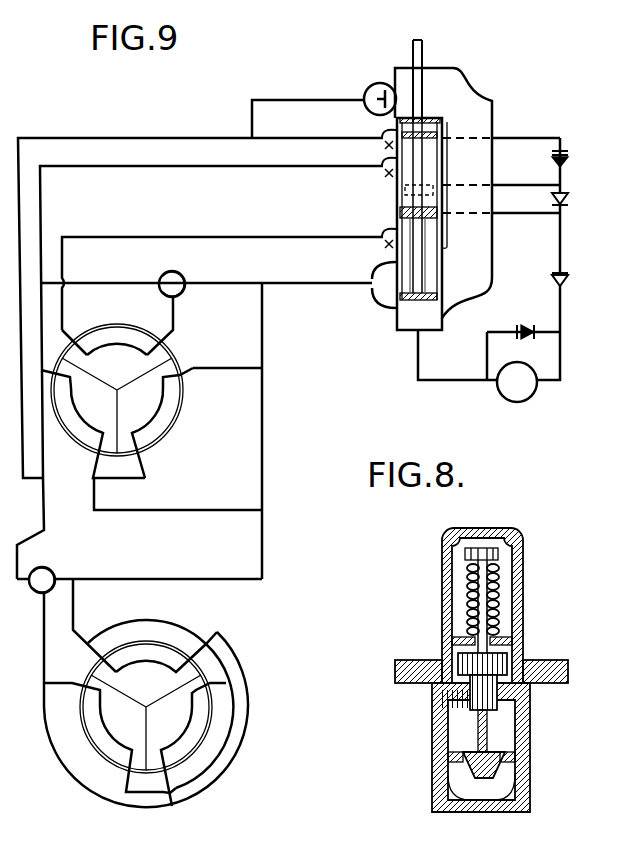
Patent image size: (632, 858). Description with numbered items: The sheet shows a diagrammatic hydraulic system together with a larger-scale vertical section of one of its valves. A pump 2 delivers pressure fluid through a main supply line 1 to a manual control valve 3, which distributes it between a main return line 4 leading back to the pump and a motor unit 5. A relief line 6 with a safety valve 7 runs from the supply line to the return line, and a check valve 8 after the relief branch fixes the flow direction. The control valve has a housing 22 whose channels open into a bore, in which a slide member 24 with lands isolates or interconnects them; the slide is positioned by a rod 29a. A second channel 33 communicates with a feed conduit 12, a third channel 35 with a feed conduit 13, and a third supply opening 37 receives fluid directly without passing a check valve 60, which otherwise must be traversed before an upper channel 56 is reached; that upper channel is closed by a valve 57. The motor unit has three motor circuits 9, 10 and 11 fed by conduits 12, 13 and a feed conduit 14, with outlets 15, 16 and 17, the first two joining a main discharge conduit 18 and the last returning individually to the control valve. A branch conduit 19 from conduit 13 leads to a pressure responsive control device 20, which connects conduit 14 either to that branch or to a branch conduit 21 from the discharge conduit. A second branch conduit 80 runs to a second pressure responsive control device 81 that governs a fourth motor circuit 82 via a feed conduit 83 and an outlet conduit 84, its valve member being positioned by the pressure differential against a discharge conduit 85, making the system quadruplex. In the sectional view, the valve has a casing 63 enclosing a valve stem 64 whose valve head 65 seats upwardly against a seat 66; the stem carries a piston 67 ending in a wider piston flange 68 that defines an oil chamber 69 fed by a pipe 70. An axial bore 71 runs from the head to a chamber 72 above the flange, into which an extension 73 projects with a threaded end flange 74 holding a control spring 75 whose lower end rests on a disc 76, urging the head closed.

In FIG. 9, the main supply line 1 is at (565, 318).
In FIG. 9, the pump 2 is at (517, 402).
In FIG. 9, the manual control valve 3 is at (405, 318).
In FIG. 9, the main return line 4 is at (418, 358).
In FIG. 9, the motor unit 5 is at (165, 413).
In FIG. 9, the relief line 6 is at (487, 358).
In FIG. 9, the safety valve 7 is at (526, 330).
In FIG. 9, the check valve 8 is at (566, 280).
In FIG. 9, the motor circuit 9 is at (162, 423).
In FIG. 9, the motor circuit 10 is at (93, 424).
In FIG. 9, the motor circuit 11 is at (117, 362).
In FIG. 9, the feed conduit 12 is at (125, 138).
In FIG. 9, the feed conduit 13 is at (125, 166).
In FIG. 9, the feed conduit 14 is at (173, 330).
In FIG. 9, the outlet 15 is at (210, 369).
In FIG. 9, the outlet 16 is at (180, 510).
In FIG. 9, the outlet 17 is at (130, 237).
In FIG. 9, the main discharge conduit 18 is at (262, 337).
In FIG. 9, the branch conduit 19 is at (97, 283).
In FIG. 9, the pressure responsive control device 20 is at (180, 293).
In FIG. 9, the branch conduit 21 is at (292, 284).
In FIG. 9, the housing 22 is at (493, 260).
In FIG. 9, the slide member 24 is at (422, 158).
In FIG. 9, the rod 29a is at (421, 44).
In FIG. 9, the second channel 33 is at (387, 139).
In FIG. 9, the third channel 35 is at (388, 168).
In FIG. 9, the third supply opening 37 is at (388, 245).
In FIG. 9, the upper channel 56 is at (510, 138).
In FIG. 9, the valve 57 is at (566, 160).
In FIG. 8, the valve 57 is at (534, 772).
In FIG. 9, the check valve 60 is at (566, 200).
In FIG. 8, the casing 63 is at (560, 664).
In FIG. 8, the valve stem 64 is at (490, 718).
In FIG. 8, the valve head 65 is at (470, 780).
In FIG. 8, the seat 66 is at (462, 762).
In FIG. 8, the piston 67 is at (440, 698).
In FIG. 8, the piston flange 68 is at (443, 648).
In FIG. 8, the oil chamber 69 is at (500, 683).
In FIG. 8, the pipe 70 is at (478, 698).
In FIG. 8, the axial bore 71 is at (477, 735).
In FIG. 8, the chamber 72 is at (502, 553).
In FIG. 8, the extension 73 is at (488, 586).
In FIG. 8, the end flange 74 is at (468, 555).
In FIG. 8, the control spring 75 is at (476, 587).
In FIG. 8, the disc 76 is at (497, 633).
In FIG. 9, the second branch conduit 80 is at (40, 530).
In FIG. 9, the second pressure responsive control device 81 is at (53, 578).
In FIG. 9, the fourth motor circuit 82 is at (100, 735).
In FIG. 9, the feed conduit 83 is at (45, 653).
In FIG. 9, the outlet conduit 84 is at (73, 606).
In FIG. 9, the discharge conduit 85 is at (232, 580).